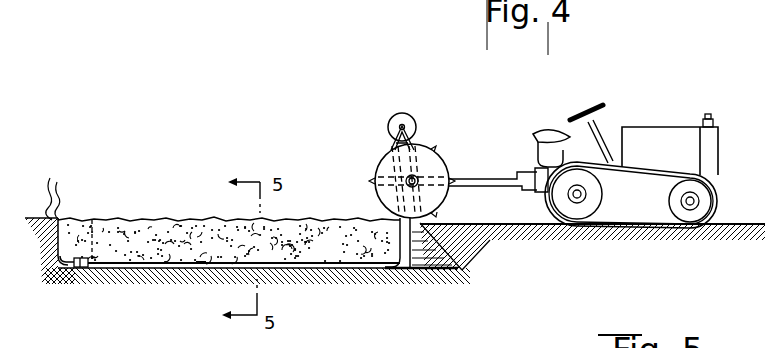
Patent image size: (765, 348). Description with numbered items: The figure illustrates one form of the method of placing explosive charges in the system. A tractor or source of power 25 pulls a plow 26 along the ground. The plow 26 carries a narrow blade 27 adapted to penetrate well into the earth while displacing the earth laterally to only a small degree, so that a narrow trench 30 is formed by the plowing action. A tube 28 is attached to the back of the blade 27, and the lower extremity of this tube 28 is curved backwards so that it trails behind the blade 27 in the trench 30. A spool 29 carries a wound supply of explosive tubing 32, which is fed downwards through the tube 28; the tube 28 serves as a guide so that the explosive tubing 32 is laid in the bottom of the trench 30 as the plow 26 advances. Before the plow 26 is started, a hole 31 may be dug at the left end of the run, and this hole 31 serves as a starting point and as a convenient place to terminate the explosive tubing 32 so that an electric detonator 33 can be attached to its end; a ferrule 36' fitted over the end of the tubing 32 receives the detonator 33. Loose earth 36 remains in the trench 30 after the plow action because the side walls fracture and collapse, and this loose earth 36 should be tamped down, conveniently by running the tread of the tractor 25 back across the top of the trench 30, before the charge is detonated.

The tractor 25 is at (689, 160).
The plow 26 is at (448, 152).
The narrow blade 27 is at (427, 275).
The tube 28 is at (403, 273).
The spool 29 is at (415, 112).
The trench 30 is at (330, 260).
The hole 31 is at (92, 220).
The explosive tubing 32 is at (132, 265).
The electric detonator 33 is at (66, 262).
The loose earth 36 is at (188, 289).
The ferrule 36' is at (87, 302).